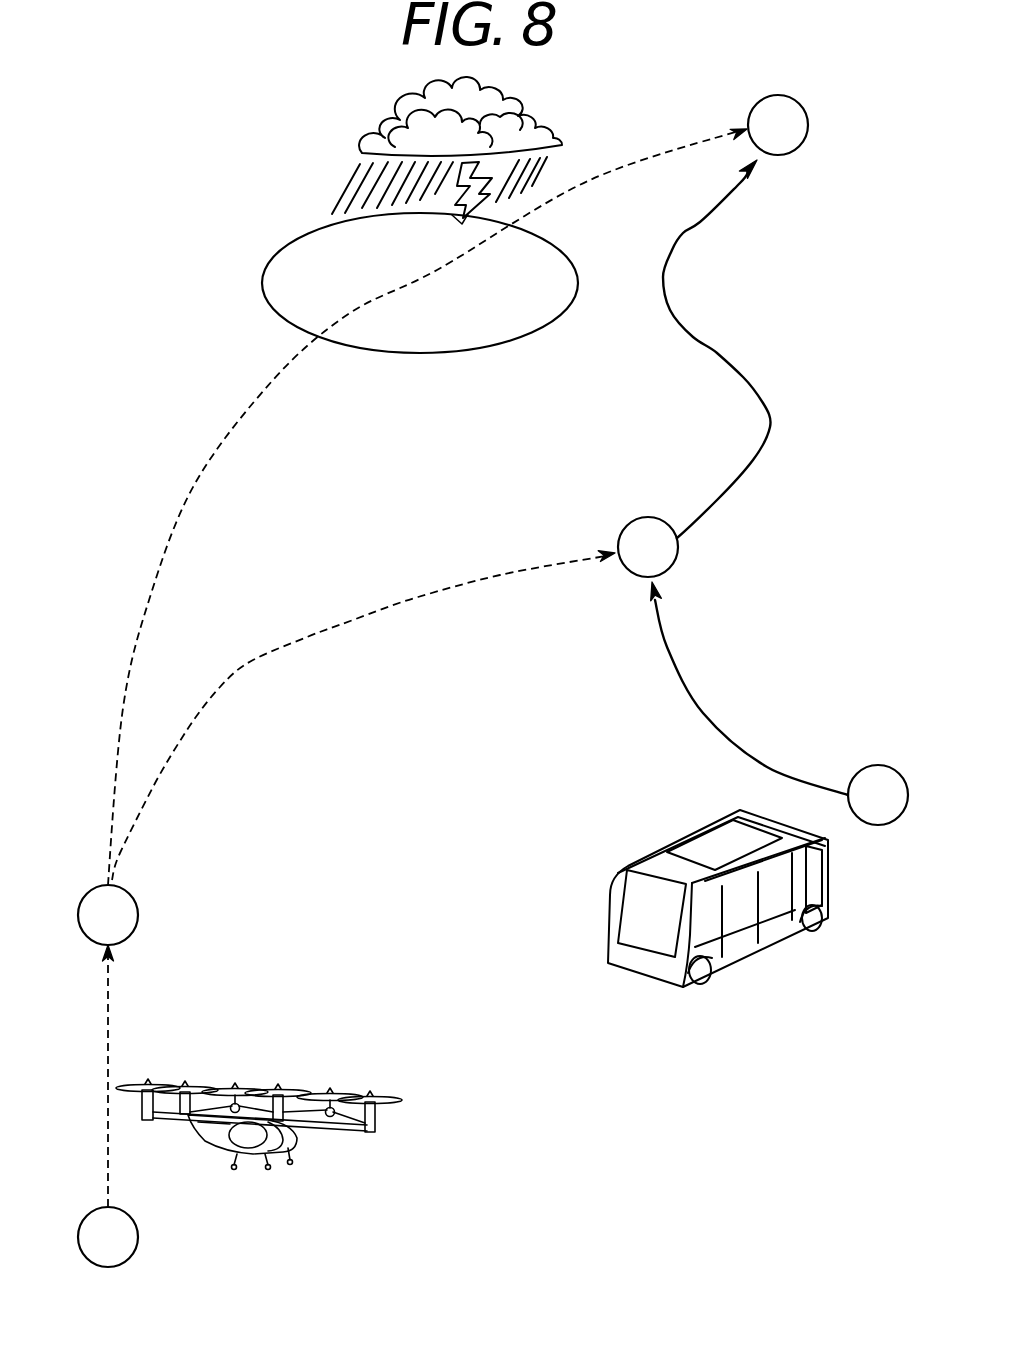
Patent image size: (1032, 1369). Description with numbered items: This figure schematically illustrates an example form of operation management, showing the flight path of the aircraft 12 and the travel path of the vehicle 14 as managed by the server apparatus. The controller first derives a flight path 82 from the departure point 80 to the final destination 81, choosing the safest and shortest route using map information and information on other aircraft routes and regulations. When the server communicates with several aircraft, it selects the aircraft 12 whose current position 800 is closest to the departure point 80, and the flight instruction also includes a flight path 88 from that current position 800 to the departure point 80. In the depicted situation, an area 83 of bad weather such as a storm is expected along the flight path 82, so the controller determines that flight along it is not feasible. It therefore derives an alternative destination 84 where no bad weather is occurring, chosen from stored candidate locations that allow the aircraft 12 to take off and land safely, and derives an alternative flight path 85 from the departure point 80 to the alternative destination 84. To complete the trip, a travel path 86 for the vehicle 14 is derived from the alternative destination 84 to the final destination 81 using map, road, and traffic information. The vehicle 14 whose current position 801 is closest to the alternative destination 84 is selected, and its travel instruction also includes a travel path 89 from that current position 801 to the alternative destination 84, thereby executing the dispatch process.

The aircraft 12 is at (277, 1093).
The vehicle 14 is at (688, 835).
The departure point 80 is at (138, 913).
The final destination 81 is at (806, 112).
The flight path 82 is at (198, 480).
The area of bad weather 83 is at (487, 347).
The alternative destination 84 is at (672, 566).
The alternative flight path 85 is at (307, 637).
The travel path 86 is at (697, 222).
The flight path 88 is at (105, 1073).
The travel path 89 is at (705, 713).
The current position 800 is at (138, 1235).
The current position 801 is at (862, 768).